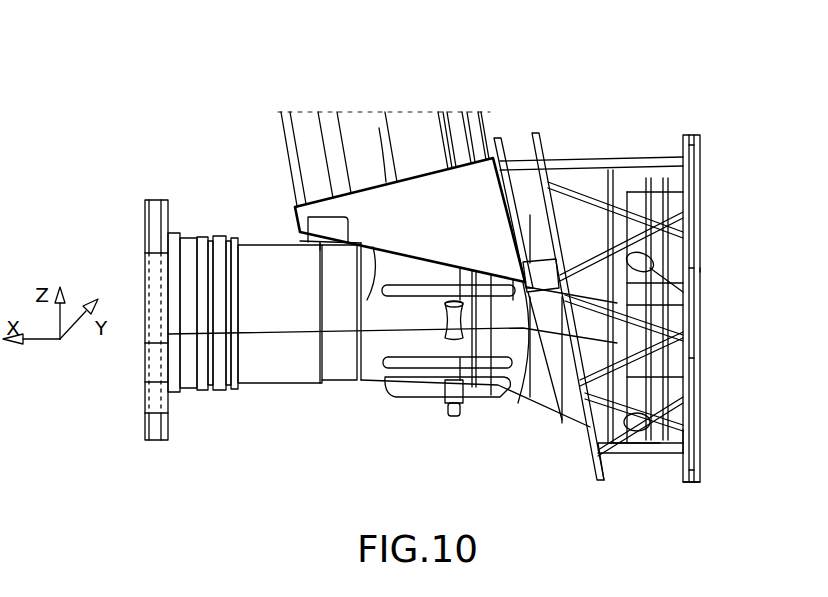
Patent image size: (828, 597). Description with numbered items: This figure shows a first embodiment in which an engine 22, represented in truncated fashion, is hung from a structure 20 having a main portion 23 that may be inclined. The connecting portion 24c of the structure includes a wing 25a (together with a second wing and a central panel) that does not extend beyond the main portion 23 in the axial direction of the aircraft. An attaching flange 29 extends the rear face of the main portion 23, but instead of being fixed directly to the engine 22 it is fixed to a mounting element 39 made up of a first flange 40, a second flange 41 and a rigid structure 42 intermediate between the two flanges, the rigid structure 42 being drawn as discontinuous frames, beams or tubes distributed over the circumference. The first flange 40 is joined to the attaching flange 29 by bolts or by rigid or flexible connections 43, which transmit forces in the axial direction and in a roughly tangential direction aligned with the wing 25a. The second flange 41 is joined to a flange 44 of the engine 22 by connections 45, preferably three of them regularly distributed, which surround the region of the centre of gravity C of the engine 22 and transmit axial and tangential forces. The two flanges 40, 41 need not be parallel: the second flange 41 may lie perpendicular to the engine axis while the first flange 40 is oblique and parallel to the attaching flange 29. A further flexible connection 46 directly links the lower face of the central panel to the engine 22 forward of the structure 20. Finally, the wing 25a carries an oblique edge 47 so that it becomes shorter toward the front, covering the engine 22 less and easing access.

The structure 20 is at (204, 121).
The engine 22 is at (312, 420).
The main portion 23 is at (379, 128).
The connecting portion 24c is at (288, 215).
The wing 25a is at (409, 231).
The attaching flange 29 is at (488, 158).
The mounting element 39 is at (660, 103).
The first flange 40 is at (596, 462).
The second flange 41 is at (684, 446).
The rigid structure 42 is at (632, 473).
The connections 43 is at (519, 152).
The flange of engine 44 is at (701, 470).
The connections 45 is at (703, 145).
The flexible connection 46 is at (313, 243).
The oblique edge 47 is at (378, 362).
The centre of gravity C is at (703, 270).